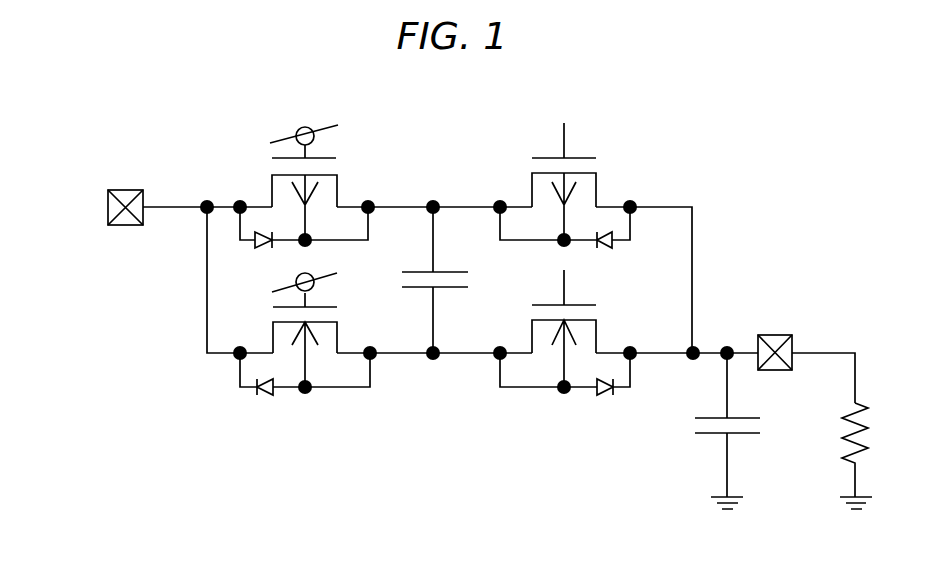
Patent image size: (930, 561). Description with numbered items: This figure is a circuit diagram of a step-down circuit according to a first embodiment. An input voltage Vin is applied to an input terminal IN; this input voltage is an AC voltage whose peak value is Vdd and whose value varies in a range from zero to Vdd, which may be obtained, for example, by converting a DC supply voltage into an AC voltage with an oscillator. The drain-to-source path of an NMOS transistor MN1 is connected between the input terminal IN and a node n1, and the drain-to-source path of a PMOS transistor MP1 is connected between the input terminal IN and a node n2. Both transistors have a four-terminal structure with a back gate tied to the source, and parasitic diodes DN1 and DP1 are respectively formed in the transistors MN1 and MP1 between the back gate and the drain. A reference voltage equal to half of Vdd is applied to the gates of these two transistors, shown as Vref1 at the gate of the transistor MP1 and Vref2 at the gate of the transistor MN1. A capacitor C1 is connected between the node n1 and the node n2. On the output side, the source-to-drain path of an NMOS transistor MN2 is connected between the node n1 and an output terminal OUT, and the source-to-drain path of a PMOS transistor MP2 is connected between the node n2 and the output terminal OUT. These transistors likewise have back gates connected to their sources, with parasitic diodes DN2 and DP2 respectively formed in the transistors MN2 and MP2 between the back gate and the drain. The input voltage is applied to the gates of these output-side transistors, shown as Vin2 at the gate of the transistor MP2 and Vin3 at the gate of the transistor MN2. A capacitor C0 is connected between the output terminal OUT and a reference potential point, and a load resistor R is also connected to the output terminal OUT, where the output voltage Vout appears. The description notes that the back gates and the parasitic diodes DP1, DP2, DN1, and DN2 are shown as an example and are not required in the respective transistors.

The input terminal IN is at (123, 190).
The output terminal OUT is at (771, 335).
The input voltage Vin is at (76, 208).
The output voltage Vout is at (826, 335).
The PMOS transistor MP1 is at (327, 182).
The PMOS transistor MP2 is at (588, 181).
The NMOS transistor MN1 is at (329, 330).
The NMOS transistor MN2 is at (589, 328).
The parasitic diode DP1 is at (297, 243).
The parasitic diode DP2 is at (581, 239).
The parasitic diode DN1 is at (303, 391).
The parasitic diode DN2 is at (569, 391).
The capacitor C1 is at (435, 280).
The capacitor C0 is at (728, 431).
The load (resistor) R is at (845, 456).
The node n1 is at (468, 341).
The node n2 is at (468, 194).
The reference voltage Vref Vref1 is at (305, 107).
The reference voltage Vref Vref2 is at (353, 290).
The input voltage Vin Vin2 is at (544, 130).
The input voltage Vin Vin3 is at (544, 278).